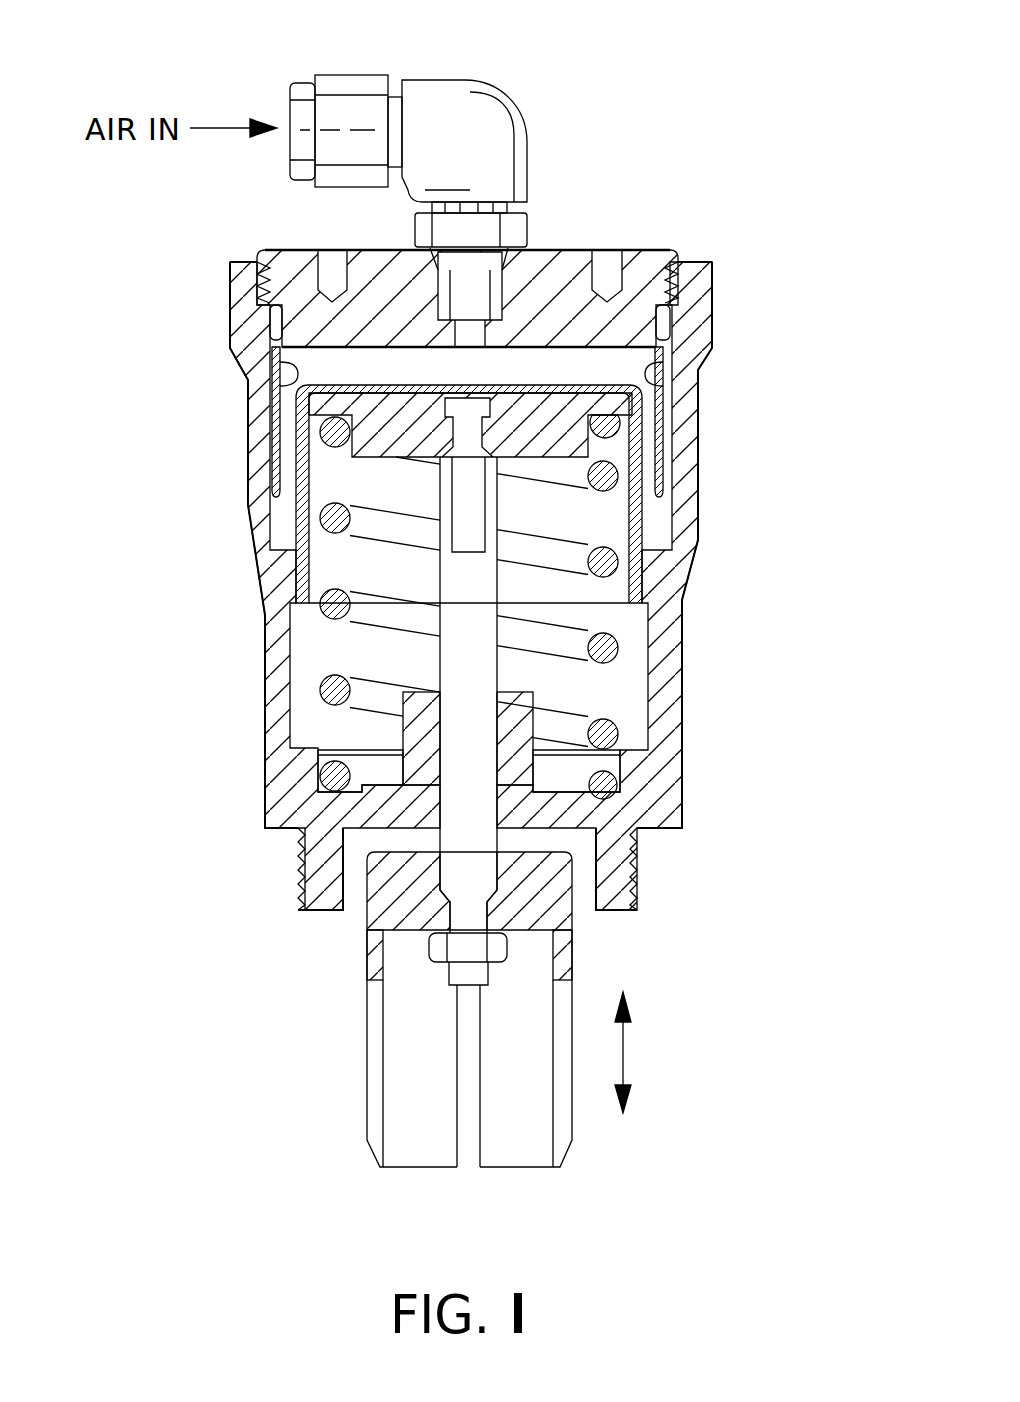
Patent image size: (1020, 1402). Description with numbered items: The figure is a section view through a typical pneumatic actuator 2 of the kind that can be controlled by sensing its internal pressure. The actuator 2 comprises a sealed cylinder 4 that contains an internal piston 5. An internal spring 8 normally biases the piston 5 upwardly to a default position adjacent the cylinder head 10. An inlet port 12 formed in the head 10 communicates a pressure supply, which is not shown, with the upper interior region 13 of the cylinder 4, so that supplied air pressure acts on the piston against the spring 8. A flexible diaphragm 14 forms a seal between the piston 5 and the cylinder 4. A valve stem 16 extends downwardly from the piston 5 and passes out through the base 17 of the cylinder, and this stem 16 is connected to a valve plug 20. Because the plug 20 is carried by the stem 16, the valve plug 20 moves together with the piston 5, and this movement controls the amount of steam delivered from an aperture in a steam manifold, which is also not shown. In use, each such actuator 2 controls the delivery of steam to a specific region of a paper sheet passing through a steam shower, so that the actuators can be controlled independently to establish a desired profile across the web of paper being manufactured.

The actuator 2 is at (707, 645).
The sealed cylinder 4 is at (702, 447).
The internal piston 5 is at (255, 552).
The internal spring 8 is at (607, 663).
The cylinder head 10 is at (565, 283).
The inlet port 12 is at (347, 110).
The upper interior region 13 is at (625, 370).
The flexible diaphragm 14 is at (283, 381).
The valve stem 16 is at (457, 652).
The base 17 is at (413, 800).
The valve plug 20 is at (572, 1150).